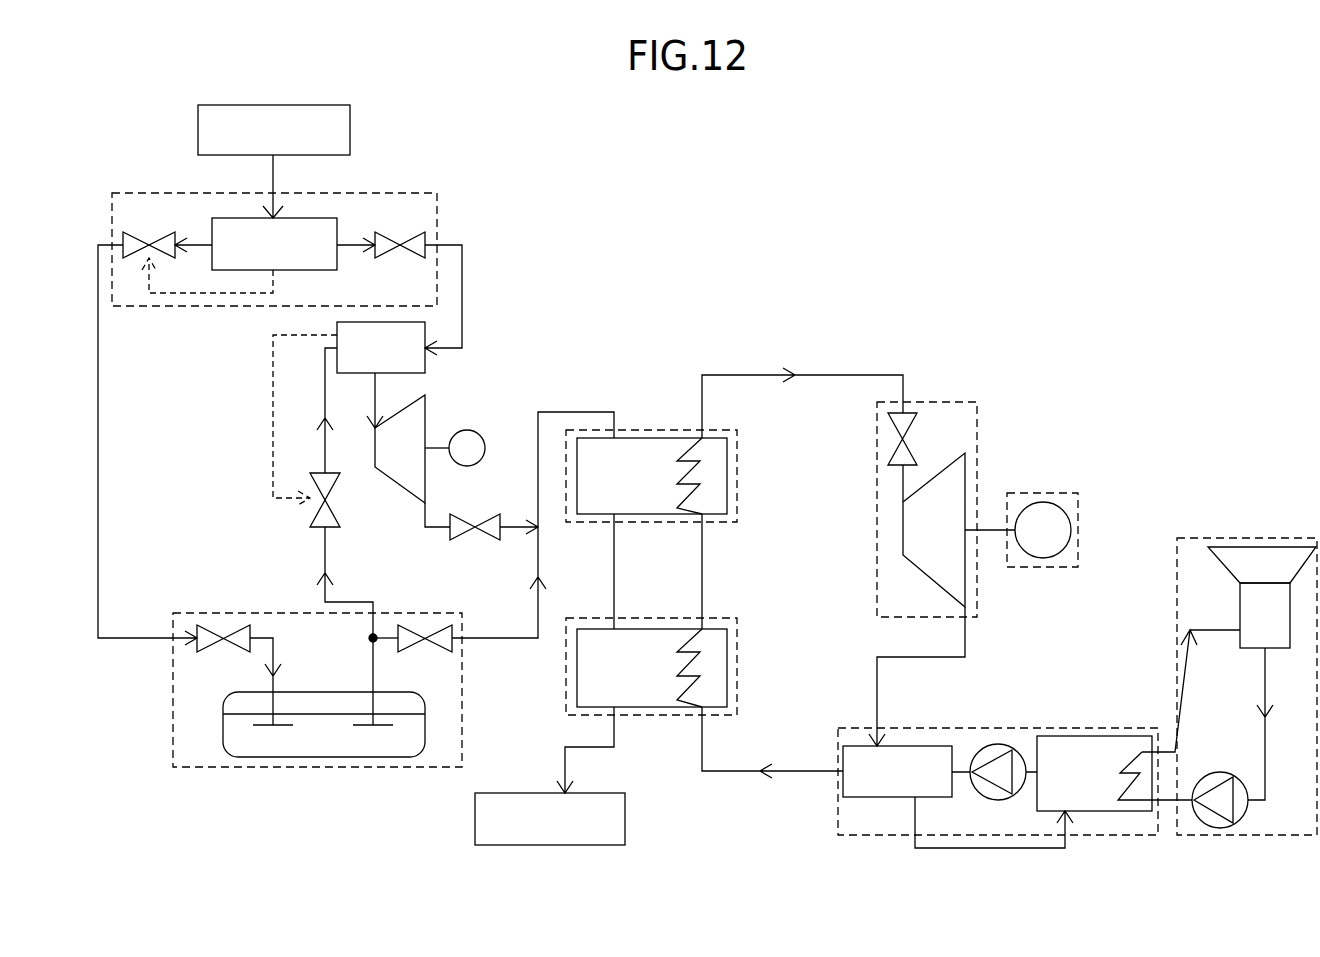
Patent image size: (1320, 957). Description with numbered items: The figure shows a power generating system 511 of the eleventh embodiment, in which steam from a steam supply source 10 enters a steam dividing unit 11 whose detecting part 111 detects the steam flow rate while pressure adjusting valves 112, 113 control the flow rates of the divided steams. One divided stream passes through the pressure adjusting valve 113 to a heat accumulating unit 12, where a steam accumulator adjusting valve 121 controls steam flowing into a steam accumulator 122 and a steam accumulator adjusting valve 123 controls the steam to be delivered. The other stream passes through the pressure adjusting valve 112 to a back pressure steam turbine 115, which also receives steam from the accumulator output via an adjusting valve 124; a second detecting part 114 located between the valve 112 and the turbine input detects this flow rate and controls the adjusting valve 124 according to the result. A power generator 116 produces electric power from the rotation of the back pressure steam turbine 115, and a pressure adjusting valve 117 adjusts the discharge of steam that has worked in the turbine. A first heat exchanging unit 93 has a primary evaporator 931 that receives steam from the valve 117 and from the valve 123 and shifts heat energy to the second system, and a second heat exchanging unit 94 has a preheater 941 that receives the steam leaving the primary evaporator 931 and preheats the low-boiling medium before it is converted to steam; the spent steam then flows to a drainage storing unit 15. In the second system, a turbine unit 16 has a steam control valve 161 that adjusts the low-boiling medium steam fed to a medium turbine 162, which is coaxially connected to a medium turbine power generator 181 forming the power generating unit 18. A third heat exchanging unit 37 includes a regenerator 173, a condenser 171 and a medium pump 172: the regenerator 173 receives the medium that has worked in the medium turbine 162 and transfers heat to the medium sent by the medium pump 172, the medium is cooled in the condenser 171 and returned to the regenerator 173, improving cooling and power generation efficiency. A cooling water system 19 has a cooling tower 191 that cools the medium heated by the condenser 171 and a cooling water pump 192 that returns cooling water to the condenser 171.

The steam supply source 10 is at (352, 129).
The steam dividing unit 11 is at (388, 189).
The detecting part 111 is at (330, 218).
The pressure adjusting valve 112 is at (378, 258).
The pressure adjusting valve 113 is at (125, 232).
The second detecting part 114 is at (427, 360).
The back pressure steam turbine 115 is at (405, 488).
The power generator 116 is at (470, 429).
The pressure adjusting valve 117 is at (488, 541).
The heat accumulating unit 12 is at (168, 791).
The steam accumulator adjusting valve 121 is at (242, 625).
The steam accumulator 122 is at (352, 758).
The steam accumulator adjusting valve 123 is at (400, 625).
The adjusting valve 124 is at (313, 527).
The drainage storing unit 15 is at (627, 819).
The turbine unit 16 is at (966, 395).
The steam control valve 161 is at (888, 466).
The medium turbine 162 is at (903, 555).
The power generating unit 18 is at (1107, 514).
The medium turbine power generator 181 is at (1040, 502).
The cooling water system 19 is at (1315, 534).
The cooling tower 191 is at (1240, 598).
The cooling water pump 192 is at (1218, 772).
The third heat exchanging unit 37 is at (1060, 720).
The condenser 171 is at (1118, 736).
The medium pump 172 is at (992, 745).
The regenerator 173 is at (912, 746).
The first heat exchanging unit 93 is at (663, 418).
The primary evaporator 931 is at (729, 468).
The second heat exchanging unit 94 is at (670, 610).
The preheater 941 is at (729, 666).
The power generating system 511 is at (791, 883).